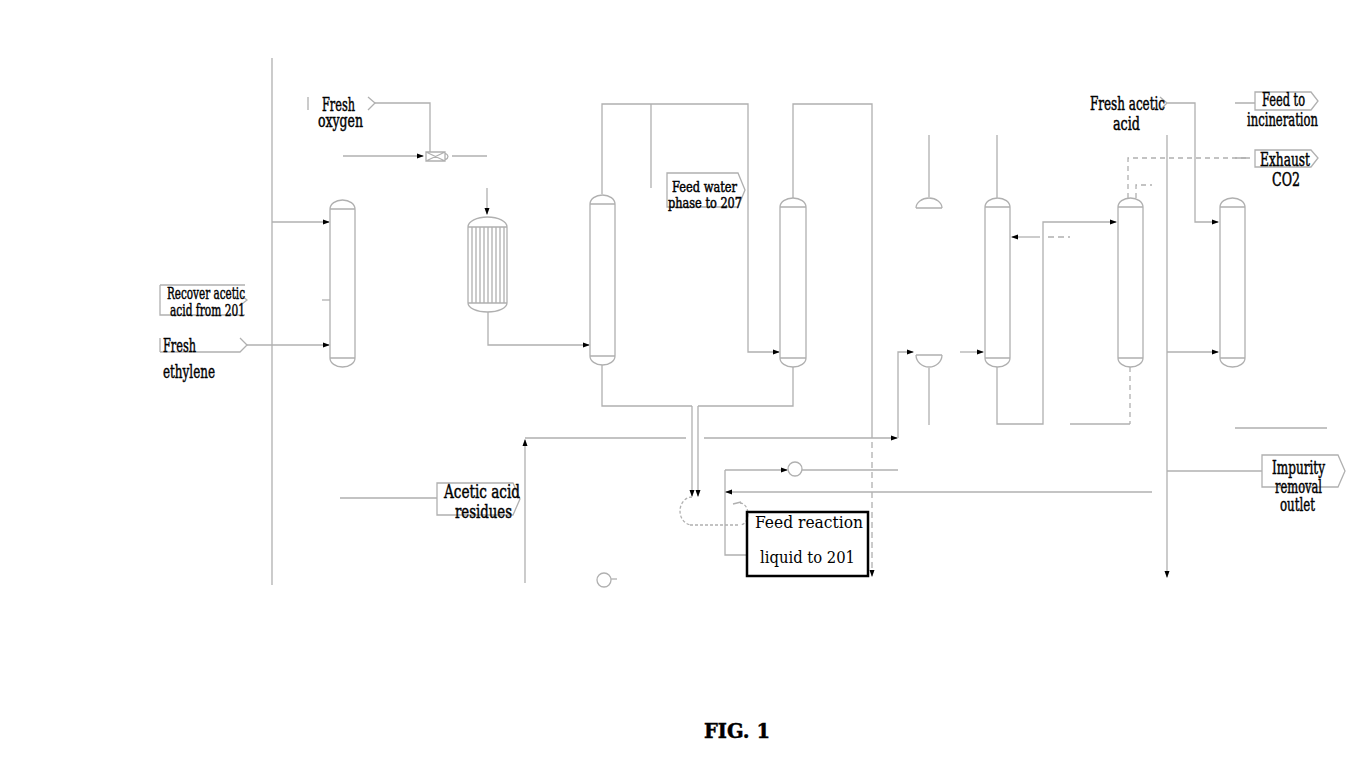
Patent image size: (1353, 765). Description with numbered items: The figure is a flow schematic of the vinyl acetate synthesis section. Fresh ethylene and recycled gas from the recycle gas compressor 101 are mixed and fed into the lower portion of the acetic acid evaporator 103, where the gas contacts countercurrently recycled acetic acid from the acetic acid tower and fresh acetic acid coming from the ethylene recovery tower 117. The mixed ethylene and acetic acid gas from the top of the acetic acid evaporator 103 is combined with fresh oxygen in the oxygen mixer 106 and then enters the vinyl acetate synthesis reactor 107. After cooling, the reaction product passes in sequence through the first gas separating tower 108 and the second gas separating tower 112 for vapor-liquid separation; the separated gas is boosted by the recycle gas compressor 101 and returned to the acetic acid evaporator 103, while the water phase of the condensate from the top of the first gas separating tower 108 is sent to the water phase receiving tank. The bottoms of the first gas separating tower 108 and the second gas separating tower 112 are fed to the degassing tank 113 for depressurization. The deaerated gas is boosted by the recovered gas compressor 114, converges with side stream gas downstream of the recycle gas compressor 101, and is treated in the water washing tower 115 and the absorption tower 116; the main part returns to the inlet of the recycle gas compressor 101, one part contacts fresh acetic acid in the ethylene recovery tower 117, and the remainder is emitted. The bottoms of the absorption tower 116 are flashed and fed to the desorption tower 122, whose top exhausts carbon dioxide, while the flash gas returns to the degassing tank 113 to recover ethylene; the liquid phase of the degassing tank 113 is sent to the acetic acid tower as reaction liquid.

The recycle gas compressor 101 is at (616, 573).
The acetic acid evaporator 103 is at (342, 283).
The oxygen mixer 106 is at (437, 168).
The vinyl acetate synthesis reactor 107 is at (475, 250).
The first gas separating tower 108 is at (602, 280).
The second gas separating tower 112 is at (793, 282).
The degassing tank 113 is at (714, 511).
The recovered gas compressor 114 is at (811, 475).
The water washing tower 115 is at (929, 280).
The absorption tower 116 is at (997, 251).
The ethylene recovery tower 117 is at (1232, 282).
The desorption tower 122 is at (1183, 291).